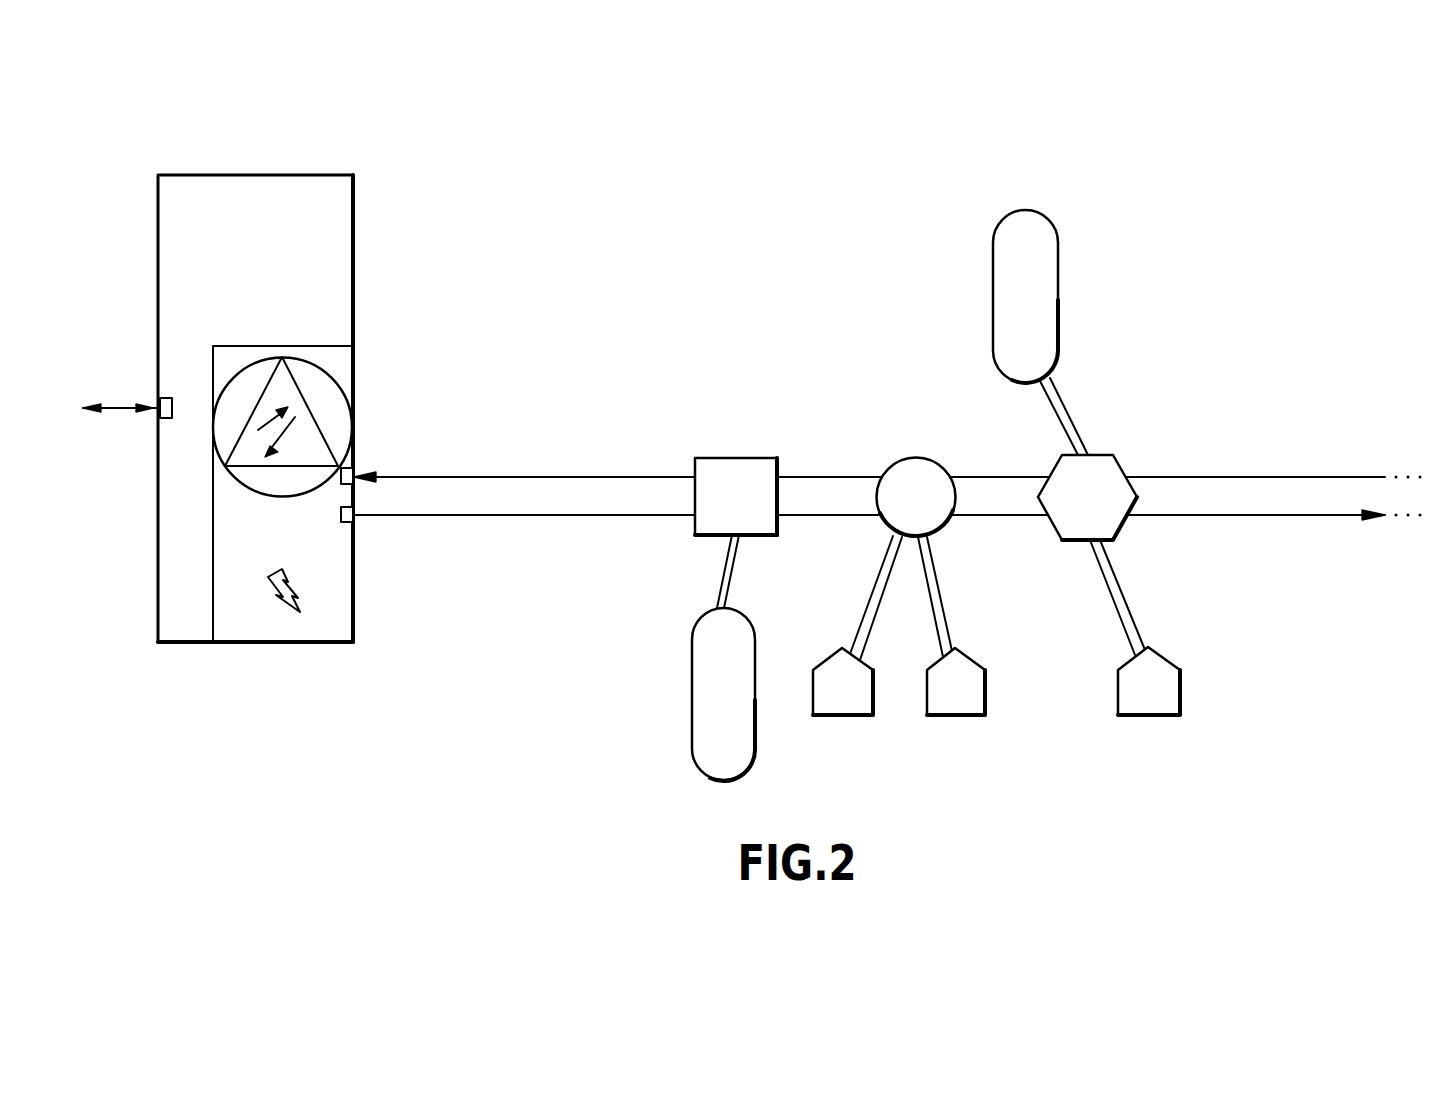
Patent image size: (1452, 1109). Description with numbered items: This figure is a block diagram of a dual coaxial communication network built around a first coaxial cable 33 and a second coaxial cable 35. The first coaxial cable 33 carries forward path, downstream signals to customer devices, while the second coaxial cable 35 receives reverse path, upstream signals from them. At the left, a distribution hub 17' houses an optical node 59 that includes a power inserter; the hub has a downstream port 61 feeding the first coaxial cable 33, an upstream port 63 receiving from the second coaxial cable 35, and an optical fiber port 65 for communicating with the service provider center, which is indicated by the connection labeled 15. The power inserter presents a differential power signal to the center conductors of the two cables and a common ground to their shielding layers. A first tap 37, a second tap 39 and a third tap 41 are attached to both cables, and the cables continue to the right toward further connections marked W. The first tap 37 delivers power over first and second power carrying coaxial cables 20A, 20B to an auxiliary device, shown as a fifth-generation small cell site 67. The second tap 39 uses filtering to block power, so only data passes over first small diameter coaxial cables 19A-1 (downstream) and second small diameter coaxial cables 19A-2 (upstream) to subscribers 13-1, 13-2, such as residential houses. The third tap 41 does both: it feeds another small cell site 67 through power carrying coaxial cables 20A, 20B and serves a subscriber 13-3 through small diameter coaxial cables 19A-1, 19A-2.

The distribution hub 17' is at (291, 408).
The optical node 59 is at (302, 346).
The optical fiber port 65 is at (170, 396).
The electrical grid connection 15 is at (118, 412).
The upstream port 63 is at (354, 468).
The downstream port 61 is at (347, 522).
The second coaxial cable 35 is at (550, 476).
The first coaxial cable 33 is at (567, 516).
The first tap 37 is at (733, 457).
The second tap 39 is at (907, 458).
The third tap 41 is at (1115, 457).
The first power carrying coaxial cable 20A is at (723, 562).
The second power carrying coaxial cable 20B is at (735, 572).
The 5G small cell site 67 is at (712, 703).
The first small diameter coaxial cable 19A-1 is at (885, 565).
The second small diameter coaxial cable 19A-2 is at (943, 593).
The subscriber 13-1 is at (837, 705).
The subscriber 13-2 is at (953, 705).
The subscriber 13-3 is at (1157, 705).
The further connection W is at (1424, 496).